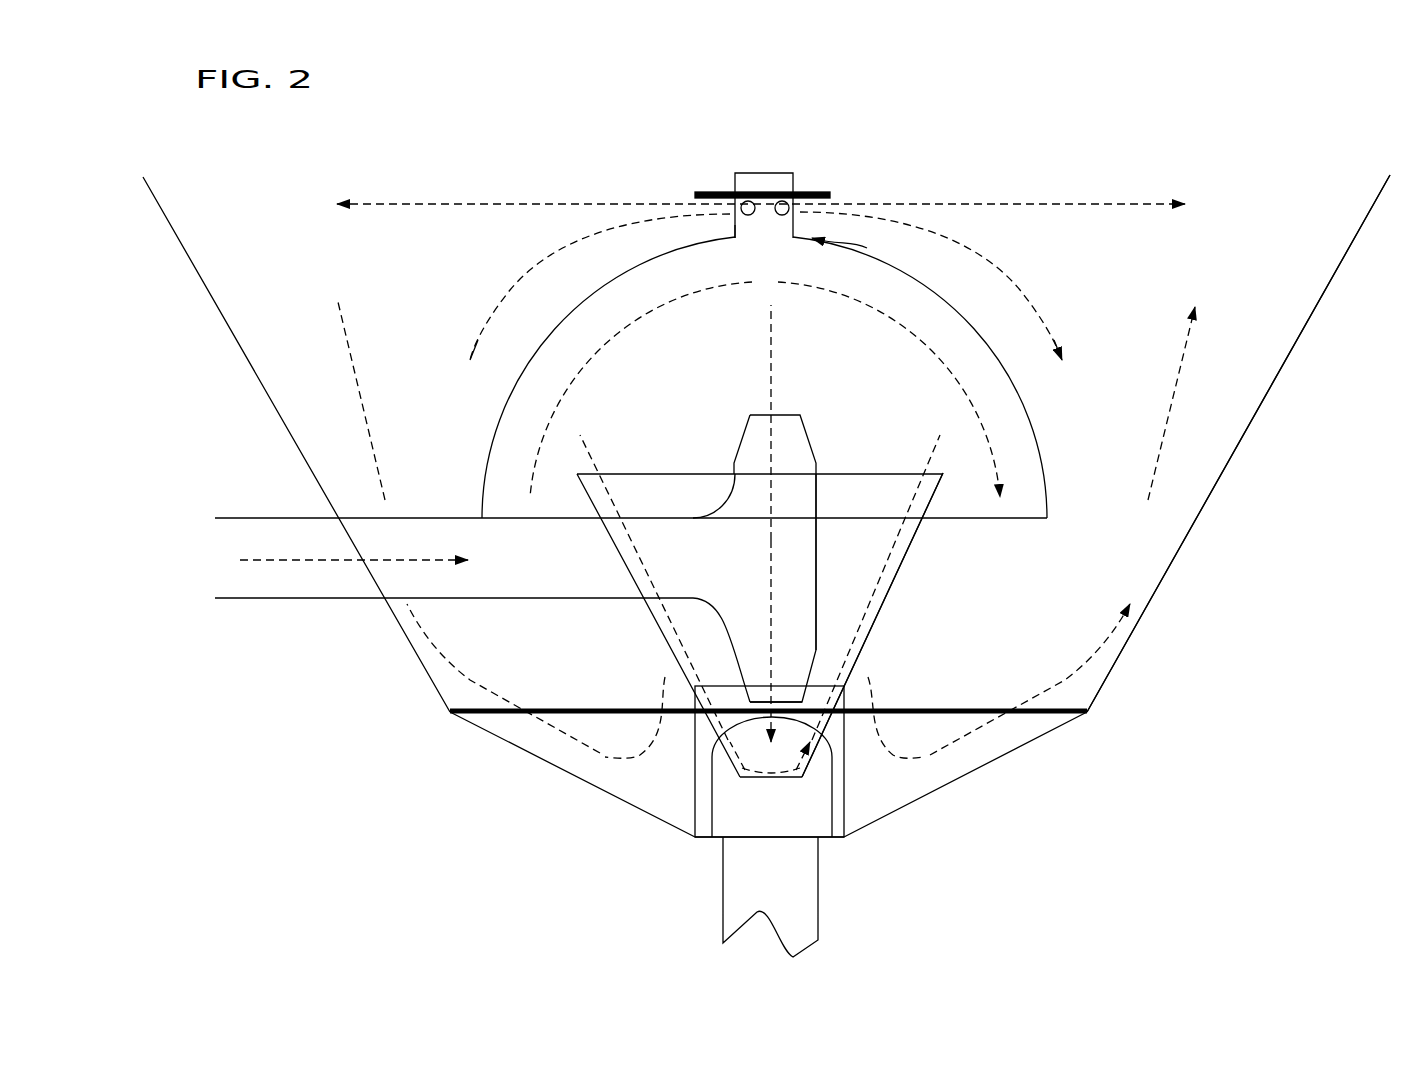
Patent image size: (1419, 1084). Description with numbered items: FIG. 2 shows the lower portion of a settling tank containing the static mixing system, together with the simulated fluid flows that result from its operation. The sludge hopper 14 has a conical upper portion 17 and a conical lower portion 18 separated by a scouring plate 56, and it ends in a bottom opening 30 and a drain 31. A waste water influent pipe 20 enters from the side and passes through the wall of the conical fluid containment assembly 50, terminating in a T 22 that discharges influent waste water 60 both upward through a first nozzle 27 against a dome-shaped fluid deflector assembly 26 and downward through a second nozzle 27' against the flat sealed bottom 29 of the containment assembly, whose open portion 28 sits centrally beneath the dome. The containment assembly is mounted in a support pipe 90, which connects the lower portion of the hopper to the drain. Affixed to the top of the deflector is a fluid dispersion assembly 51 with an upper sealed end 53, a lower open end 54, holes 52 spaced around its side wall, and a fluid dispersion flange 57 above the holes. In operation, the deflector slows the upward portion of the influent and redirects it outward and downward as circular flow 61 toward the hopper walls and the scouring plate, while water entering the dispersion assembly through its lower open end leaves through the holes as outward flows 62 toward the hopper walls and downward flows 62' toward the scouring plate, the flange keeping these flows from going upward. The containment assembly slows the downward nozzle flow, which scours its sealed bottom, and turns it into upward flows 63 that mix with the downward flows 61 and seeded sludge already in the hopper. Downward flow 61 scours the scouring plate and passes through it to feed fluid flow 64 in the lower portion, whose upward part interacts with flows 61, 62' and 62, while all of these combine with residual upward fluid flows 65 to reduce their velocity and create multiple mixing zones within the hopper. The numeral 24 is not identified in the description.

The sludge hopper 14 is at (1205, 513).
The upper portion 17 is at (1130, 566).
The lower portion 18 is at (1020, 730).
The waste water influent pipe 20 is at (272, 598).
The T 22 is at (818, 627).
The inlet air flow 24 is at (297, 560).
The fluid deflector assembly 26 is at (1047, 465).
The first nozzle 27 is at (750, 524).
The second nozzle 27' is at (694, 673).
The open portion 28 is at (693, 474).
The sealed bottom 29 is at (773, 777).
The bottom opening 30 is at (757, 838).
The drain 31 is at (723, 923).
The fluid containment assembly 50 is at (885, 598).
The fluid dispersion assembly 51 is at (873, 256).
The holes 52 is at (800, 192).
The upper sealed end 53 is at (750, 172).
The lower open end 54 is at (767, 238).
The scouring plate 56 is at (1085, 705).
The fluid dispersion flange 57 is at (695, 193).
The influent waste water 60 is at (772, 583).
The downward fluid flow 61 is at (1000, 366).
The fluid flows 62 is at (797, 169).
The fluid flows 62' is at (779, 286).
The upward flows 63 is at (895, 545).
The fluid flow 64 is at (977, 727).
The upward fluid flows 65 is at (1183, 376).
The support pipe 90 is at (693, 818).